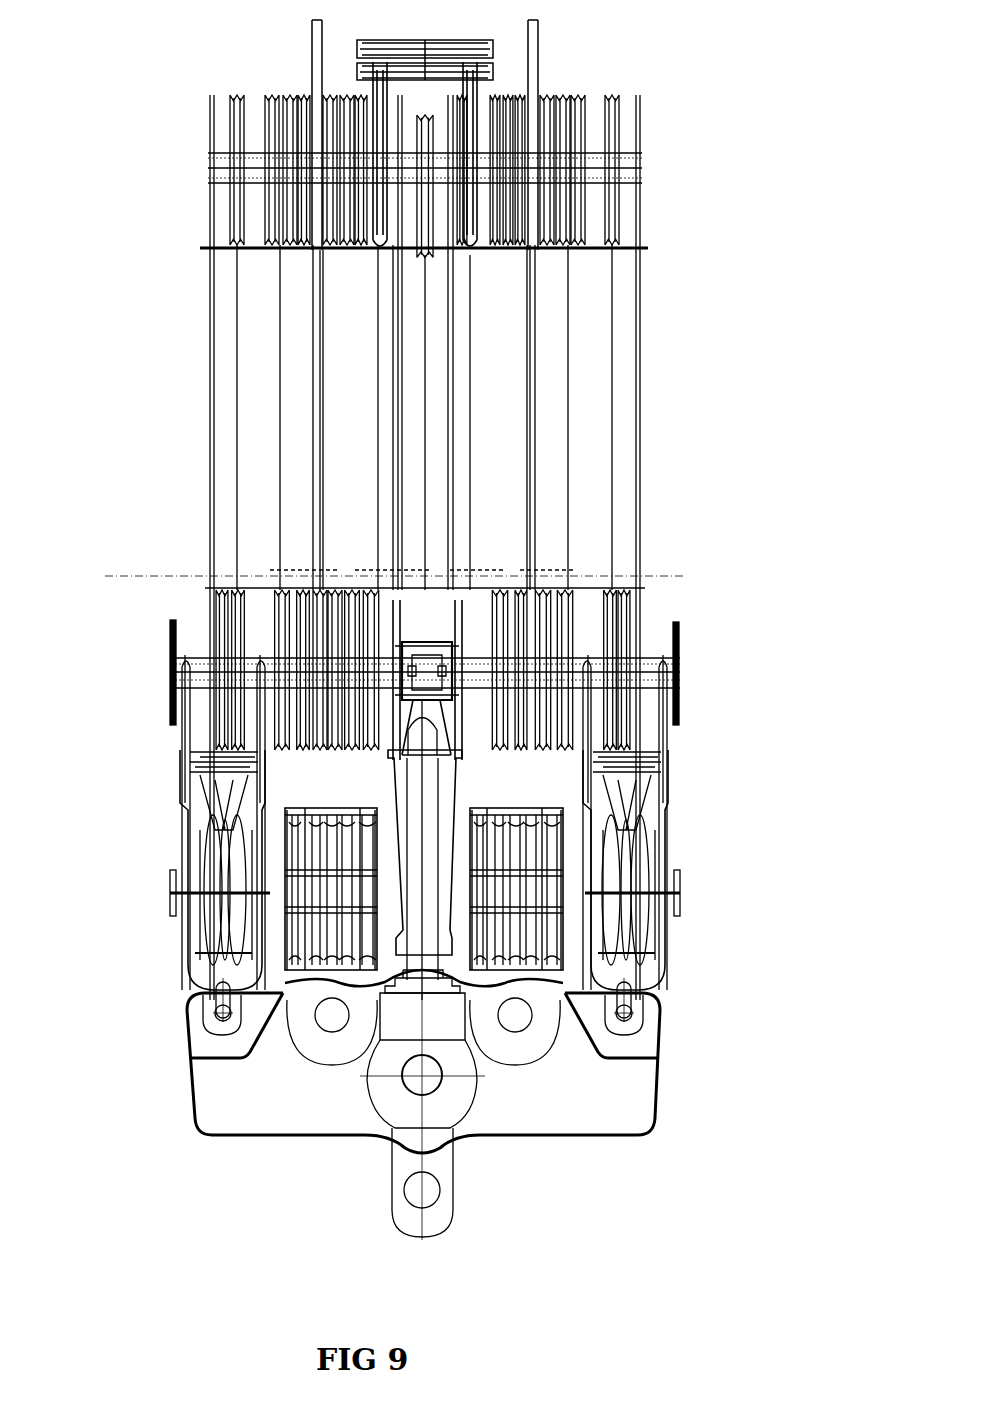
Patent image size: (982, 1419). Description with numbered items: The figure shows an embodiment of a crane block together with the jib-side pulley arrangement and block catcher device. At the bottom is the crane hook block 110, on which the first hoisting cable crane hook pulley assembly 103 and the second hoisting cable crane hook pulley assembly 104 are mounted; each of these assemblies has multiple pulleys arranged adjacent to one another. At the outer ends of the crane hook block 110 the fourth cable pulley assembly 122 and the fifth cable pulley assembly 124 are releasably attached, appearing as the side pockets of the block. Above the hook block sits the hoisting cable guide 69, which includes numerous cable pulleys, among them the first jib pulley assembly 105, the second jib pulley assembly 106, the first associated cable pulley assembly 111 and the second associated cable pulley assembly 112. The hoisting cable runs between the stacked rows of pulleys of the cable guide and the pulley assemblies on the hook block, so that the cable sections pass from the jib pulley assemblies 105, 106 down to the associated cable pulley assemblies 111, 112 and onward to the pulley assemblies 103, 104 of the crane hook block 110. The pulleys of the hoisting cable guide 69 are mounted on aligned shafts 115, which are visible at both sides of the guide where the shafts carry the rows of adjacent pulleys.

The hoisting cable guide 69 is at (435, 765).
The first hoisting cable crane hook pulley assembly 103 is at (516, 1067).
The second hoisting cable crane hook pulley assembly 104 is at (333, 1067).
The first jib pulley assembly 105 is at (500, 570).
The second jib pulley assembly 106 is at (350, 570).
The crane hook block 110 is at (200, 1140).
The first associated cable pulley assembly 111 is at (660, 598).
The second associated cable pulley assembly 112 is at (190, 585).
The aligned shafts 115 is at (210, 665).
The fourth cable pulley assembly 122 is at (223, 1048).
The fifth cable pulley assembly 124 is at (640, 1060).